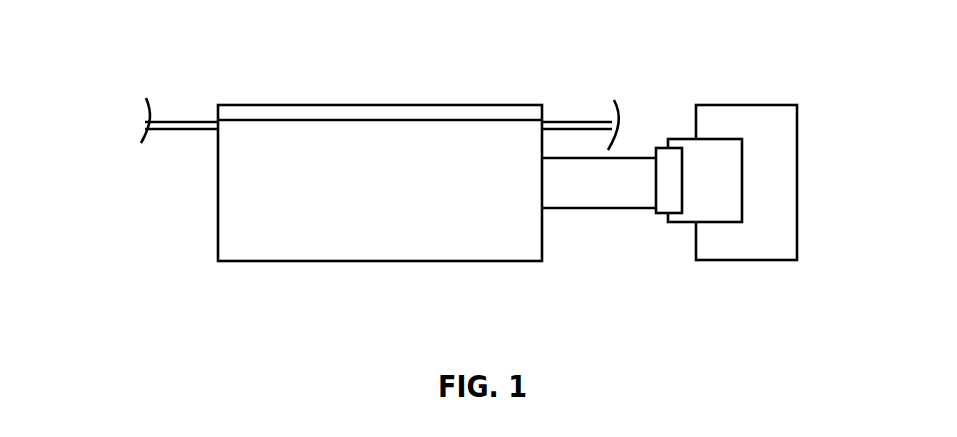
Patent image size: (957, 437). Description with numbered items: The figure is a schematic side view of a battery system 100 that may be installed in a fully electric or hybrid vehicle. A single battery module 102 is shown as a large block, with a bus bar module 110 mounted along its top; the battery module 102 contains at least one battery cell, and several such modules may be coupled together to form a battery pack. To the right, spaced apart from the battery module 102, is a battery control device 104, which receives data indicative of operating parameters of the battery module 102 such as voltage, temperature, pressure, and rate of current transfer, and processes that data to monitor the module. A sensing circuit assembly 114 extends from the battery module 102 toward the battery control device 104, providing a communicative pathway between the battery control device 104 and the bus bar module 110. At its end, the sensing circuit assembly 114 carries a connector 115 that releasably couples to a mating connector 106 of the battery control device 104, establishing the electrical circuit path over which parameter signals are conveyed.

The battery system 100 is at (493, 62).
The battery module 102 is at (413, 229).
The battery control device 104 is at (773, 262).
The mating connector 106 is at (723, 208).
The bus bar module 110 is at (285, 112).
The sensing circuit assembly 114 is at (613, 198).
The connector 115 is at (667, 198).